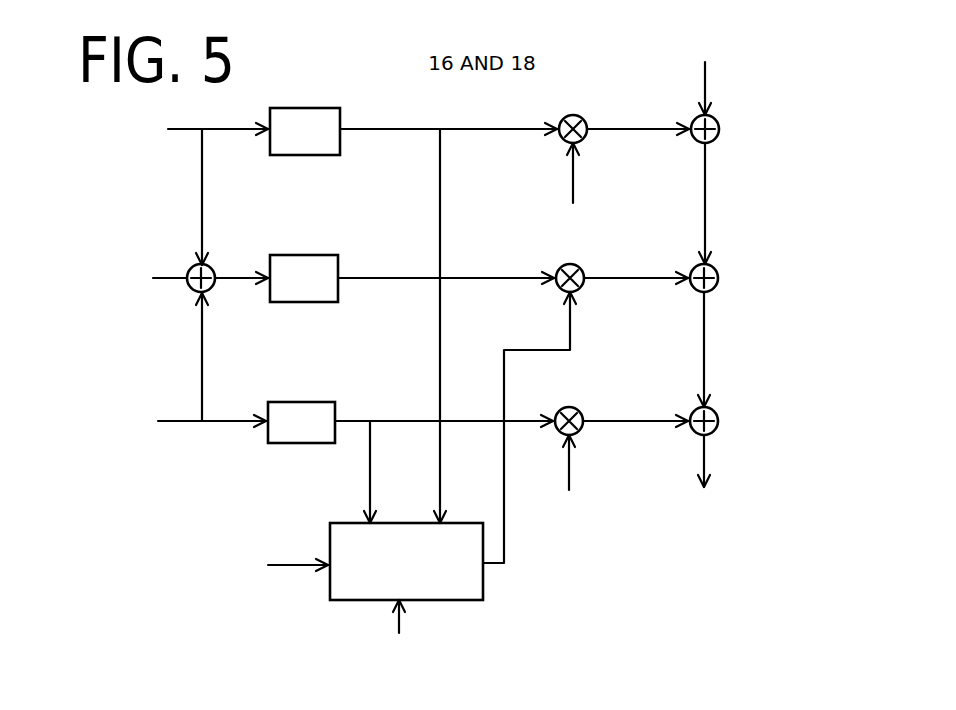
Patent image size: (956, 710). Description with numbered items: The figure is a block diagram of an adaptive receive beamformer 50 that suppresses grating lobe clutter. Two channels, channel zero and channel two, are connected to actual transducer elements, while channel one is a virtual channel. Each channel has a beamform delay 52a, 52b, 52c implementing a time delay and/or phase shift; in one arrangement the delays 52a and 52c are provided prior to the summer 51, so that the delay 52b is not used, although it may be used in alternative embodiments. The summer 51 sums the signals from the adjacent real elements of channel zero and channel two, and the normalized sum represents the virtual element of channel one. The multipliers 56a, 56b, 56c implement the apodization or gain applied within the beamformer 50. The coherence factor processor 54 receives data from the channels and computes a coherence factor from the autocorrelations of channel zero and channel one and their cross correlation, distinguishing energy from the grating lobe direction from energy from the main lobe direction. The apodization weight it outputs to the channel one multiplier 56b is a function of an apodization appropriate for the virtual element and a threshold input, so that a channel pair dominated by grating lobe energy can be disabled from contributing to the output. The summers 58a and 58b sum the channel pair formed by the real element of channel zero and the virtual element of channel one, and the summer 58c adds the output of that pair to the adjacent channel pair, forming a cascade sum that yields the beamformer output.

The adaptive receive beamformer 50 is at (175, 510).
The summer 51 is at (191, 268).
The beamform delay 52a is at (305, 108).
The beamform delay 52b is at (300, 255).
The beamform delay 52c is at (283, 402).
The coherence factor processor 54 is at (483, 582).
The multiplier 56a is at (575, 115).
The multiplier 56b is at (580, 265).
The multiplier 56c is at (574, 407).
The summer 58a is at (718, 122).
The summer 58b is at (714, 266).
The summer 58c is at (714, 410).